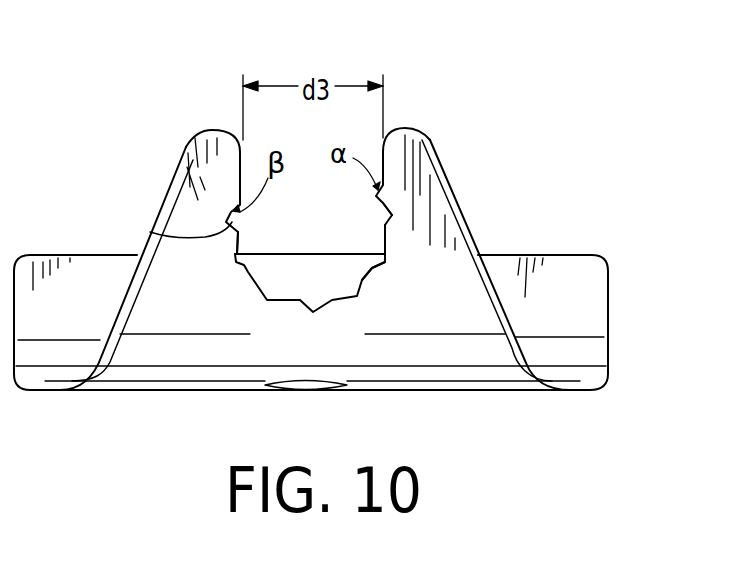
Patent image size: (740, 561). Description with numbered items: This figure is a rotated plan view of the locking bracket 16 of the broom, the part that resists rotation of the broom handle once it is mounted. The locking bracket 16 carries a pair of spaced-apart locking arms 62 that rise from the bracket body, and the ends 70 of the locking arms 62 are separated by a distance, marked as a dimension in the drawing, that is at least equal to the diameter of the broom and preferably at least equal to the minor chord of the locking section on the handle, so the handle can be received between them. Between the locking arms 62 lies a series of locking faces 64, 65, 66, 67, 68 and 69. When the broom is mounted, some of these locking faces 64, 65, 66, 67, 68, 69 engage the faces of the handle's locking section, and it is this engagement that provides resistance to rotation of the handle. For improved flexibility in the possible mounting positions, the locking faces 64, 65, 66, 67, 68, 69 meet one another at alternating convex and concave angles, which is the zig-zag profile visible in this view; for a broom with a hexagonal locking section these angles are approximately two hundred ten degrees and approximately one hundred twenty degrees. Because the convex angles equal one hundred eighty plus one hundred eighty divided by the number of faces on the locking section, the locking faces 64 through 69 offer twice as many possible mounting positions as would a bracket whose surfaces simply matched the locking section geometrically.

The locking bracket 16 is at (311, 322).
The locking arms 62 is at (175, 188).
The locking face 64 is at (252, 265).
The locking face 65 is at (243, 243).
The locking face 66 is at (153, 232).
The locking face 67 is at (385, 212).
The locking face 68 is at (383, 245).
The locking face 69 is at (380, 264).
The ends of the locking arms 70 is at (197, 142).